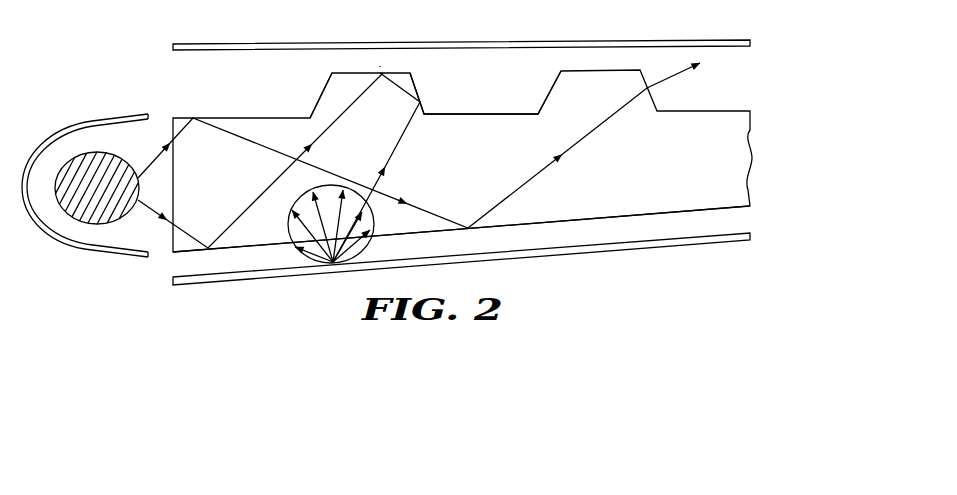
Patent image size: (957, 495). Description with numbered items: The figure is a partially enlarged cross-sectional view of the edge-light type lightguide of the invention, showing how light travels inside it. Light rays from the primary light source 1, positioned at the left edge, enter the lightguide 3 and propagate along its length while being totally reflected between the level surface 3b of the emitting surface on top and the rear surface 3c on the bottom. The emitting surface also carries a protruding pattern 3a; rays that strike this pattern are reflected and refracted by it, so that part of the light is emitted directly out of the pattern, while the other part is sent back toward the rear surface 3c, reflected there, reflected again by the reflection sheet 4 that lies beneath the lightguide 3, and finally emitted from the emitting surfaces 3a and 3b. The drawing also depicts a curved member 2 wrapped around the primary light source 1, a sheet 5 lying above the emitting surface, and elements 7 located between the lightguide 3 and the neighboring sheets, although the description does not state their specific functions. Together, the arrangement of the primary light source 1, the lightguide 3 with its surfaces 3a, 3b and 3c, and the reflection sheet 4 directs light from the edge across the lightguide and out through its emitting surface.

The primary light source 1 is at (95, 182).
The reflector 2 is at (85, 258).
The lightguide 3 is at (731, 163).
The protruding pattern 3a is at (342, 88).
The level surface 3b is at (517, 112).
The rear surface 3c is at (645, 218).
The reflection sheet 4 is at (753, 237).
The diffusion sheet 5 is at (753, 42).
The air layer 7 is at (476, 85).